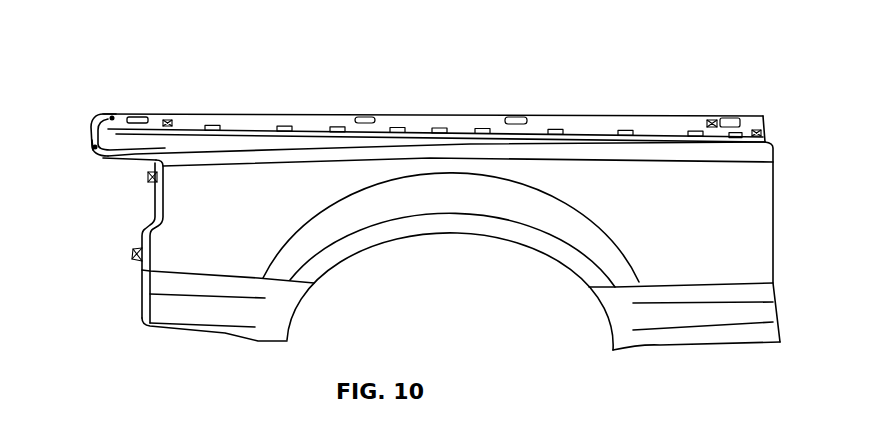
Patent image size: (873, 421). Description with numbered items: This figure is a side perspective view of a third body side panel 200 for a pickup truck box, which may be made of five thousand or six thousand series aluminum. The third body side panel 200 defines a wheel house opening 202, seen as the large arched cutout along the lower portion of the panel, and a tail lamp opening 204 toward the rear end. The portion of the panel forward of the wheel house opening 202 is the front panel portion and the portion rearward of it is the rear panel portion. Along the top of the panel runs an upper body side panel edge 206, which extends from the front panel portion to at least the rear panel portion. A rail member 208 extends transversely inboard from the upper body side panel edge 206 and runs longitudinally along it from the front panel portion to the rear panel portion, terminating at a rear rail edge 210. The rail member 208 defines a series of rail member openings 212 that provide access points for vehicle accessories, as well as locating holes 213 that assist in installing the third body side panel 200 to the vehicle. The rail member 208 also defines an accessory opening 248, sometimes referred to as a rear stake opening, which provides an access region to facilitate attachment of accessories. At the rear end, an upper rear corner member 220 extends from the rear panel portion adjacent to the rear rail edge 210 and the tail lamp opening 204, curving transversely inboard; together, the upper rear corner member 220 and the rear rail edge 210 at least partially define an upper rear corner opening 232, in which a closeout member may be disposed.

The third body side panel 200 is at (731, 48).
The wheel house opening 202 is at (360, 248).
The tail lamp opening 204 is at (128, 158).
The upper body side panel edge 206 is at (458, 138).
The rail member 208 is at (598, 117).
The rear rail edge 210 is at (113, 116).
The rail member openings 212 is at (290, 128).
The locating holes 213 is at (170, 118).
The upper rear corner member 220 is at (93, 147).
The upper rear corner opening 232 is at (112, 117).
The accessory opening 248 is at (137, 117).